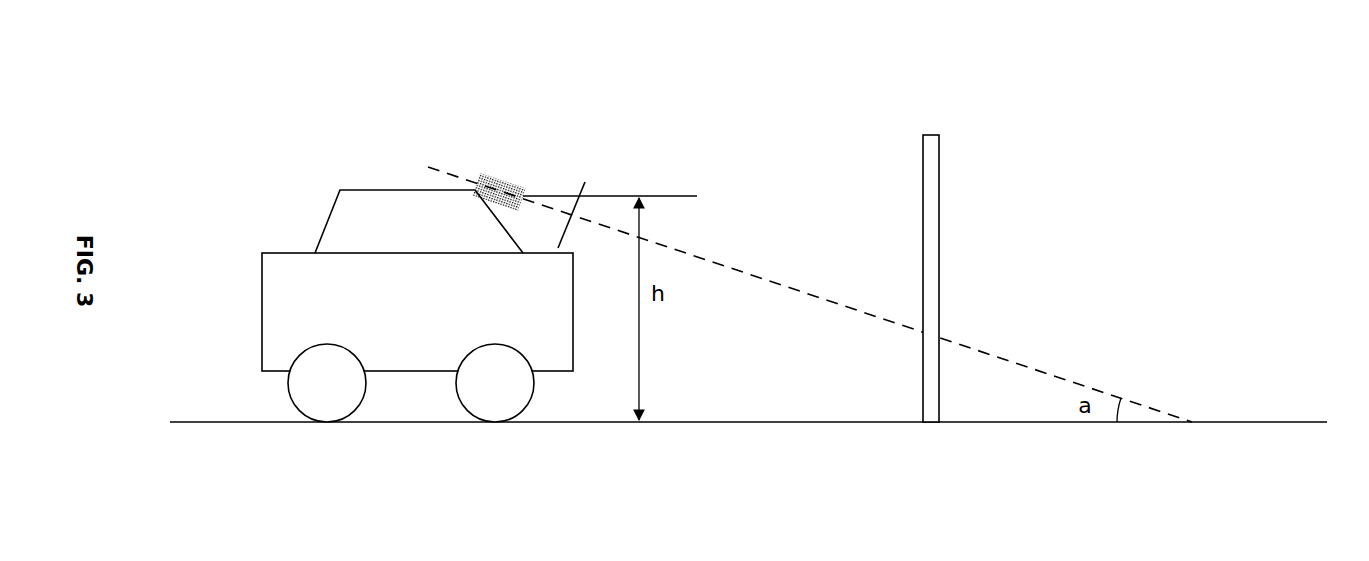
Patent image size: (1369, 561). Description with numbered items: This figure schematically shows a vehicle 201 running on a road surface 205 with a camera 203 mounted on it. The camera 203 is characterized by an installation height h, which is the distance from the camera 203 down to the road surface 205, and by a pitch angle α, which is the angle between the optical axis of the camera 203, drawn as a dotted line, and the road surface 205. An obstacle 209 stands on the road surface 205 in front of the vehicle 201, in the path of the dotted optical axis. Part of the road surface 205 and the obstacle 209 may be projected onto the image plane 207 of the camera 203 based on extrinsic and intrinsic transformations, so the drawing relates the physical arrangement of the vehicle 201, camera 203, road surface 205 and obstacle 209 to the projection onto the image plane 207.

The vehicle 201 is at (328, 218).
The camera 203 is at (505, 186).
The road surface 205 is at (1237, 422).
The image plane 207 is at (578, 186).
The obstacle 209 is at (938, 315).